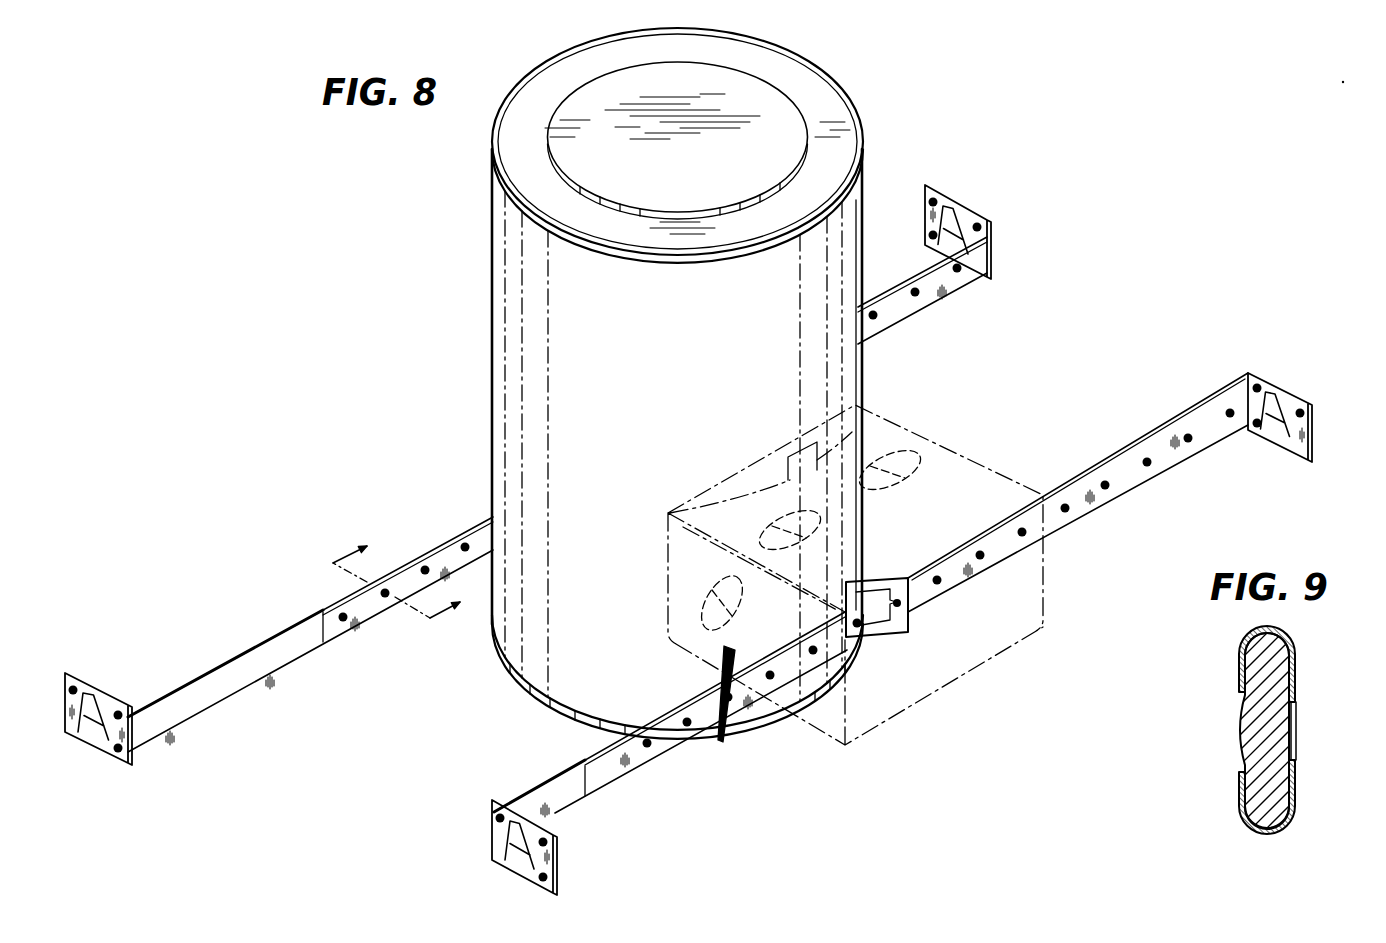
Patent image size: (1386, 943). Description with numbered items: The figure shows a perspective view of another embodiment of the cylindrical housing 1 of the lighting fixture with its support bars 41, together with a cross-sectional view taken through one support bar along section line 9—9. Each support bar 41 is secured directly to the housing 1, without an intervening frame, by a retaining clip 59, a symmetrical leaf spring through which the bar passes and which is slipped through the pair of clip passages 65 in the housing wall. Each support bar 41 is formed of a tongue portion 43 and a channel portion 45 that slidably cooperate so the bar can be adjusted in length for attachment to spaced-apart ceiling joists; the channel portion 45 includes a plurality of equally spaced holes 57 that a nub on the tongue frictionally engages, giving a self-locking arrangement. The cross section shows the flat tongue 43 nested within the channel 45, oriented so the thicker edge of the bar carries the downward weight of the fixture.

In FIG. 8, the housing 1 is at (586, 322).
In FIG. 8, the section line 9— 9 is at (408, 577).
In FIG. 8, the support bar 41 is at (688, 540).
In FIG. 8, the tongue portion 43 is at (562, 806).
In FIG. 9, the tongue portion 43 is at (1262, 725).
In FIG. 9, the channel portion 45 is at (1294, 641).
In FIG. 8, the holes 57 is at (1105, 487).
In FIG. 9, the holes 57 is at (1298, 718).
In FIG. 8, the retaining clip 59 is at (900, 636).
In FIG. 8, the clip passages 65 is at (728, 648).